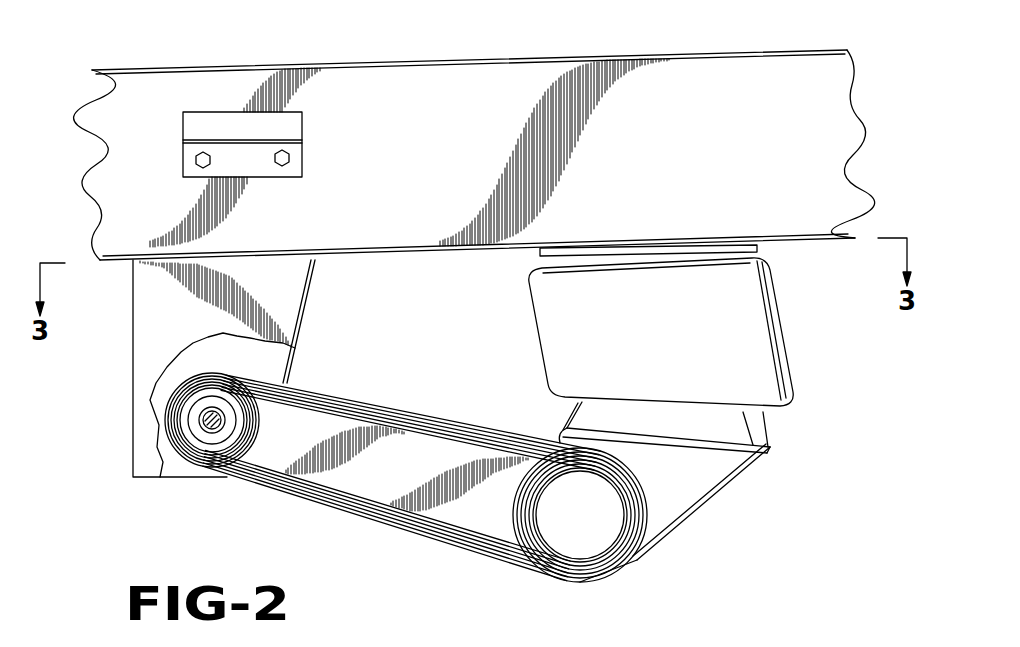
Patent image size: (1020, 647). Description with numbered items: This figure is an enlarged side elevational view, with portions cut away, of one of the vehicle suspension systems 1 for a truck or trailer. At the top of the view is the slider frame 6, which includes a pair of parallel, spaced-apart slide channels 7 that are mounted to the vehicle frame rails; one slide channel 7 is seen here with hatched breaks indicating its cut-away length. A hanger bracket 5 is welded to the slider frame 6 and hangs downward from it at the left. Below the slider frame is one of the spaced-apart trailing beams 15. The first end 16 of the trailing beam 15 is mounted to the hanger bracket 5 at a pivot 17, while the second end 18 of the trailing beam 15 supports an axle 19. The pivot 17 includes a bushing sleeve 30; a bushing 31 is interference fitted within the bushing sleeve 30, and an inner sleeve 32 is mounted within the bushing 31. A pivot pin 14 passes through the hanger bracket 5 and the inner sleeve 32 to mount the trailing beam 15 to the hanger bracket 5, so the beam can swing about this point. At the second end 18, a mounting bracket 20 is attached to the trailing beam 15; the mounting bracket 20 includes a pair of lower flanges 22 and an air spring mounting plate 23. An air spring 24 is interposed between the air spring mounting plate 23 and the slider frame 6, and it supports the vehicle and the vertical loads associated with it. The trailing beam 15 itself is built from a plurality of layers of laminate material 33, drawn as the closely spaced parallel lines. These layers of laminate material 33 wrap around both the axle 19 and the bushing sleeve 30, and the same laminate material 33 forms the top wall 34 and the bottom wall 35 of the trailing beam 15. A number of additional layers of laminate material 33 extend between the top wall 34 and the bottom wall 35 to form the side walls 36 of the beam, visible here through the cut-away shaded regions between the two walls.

The vehicle suspension system 1 is at (670, 603).
The hanger bracket 5 is at (292, 300).
The slider frame 6 is at (474, 130).
The slide channel 7 is at (792, 66).
The pivot pin 14 is at (214, 424).
The trailing beam 15 is at (401, 489).
The first end 16 is at (158, 425).
The pivot 17 is at (189, 458).
The second end 18 is at (698, 494).
The axle 19 is at (591, 540).
The mounting bracket 20 is at (727, 468).
The lower flange 22 is at (695, 488).
The air spring mounting plate 23 is at (772, 446).
The air spring 24 is at (753, 302).
The bushing sleeve 30 is at (212, 390).
The bushing 31 is at (193, 413).
The inner sleeve 32 is at (202, 410).
The laminate material 33 is at (500, 567).
The top wall 34 is at (433, 427).
The bottom wall 35 is at (455, 548).
The side wall 36 is at (353, 482).